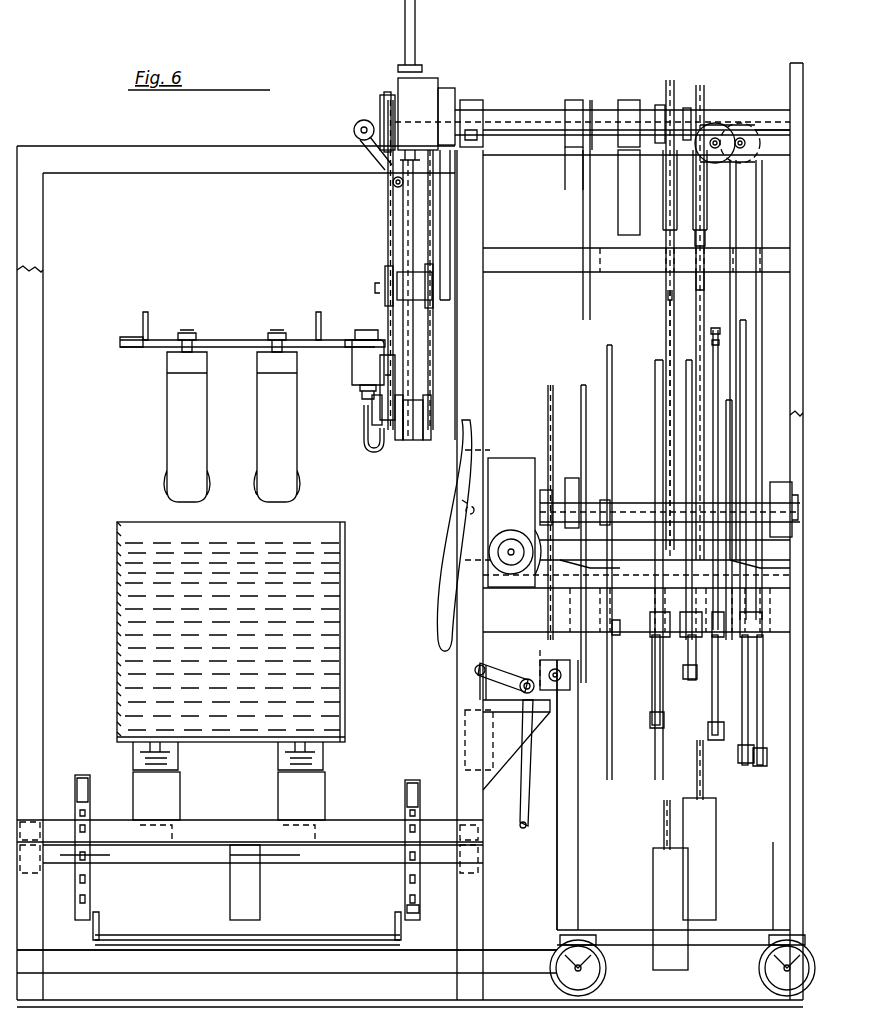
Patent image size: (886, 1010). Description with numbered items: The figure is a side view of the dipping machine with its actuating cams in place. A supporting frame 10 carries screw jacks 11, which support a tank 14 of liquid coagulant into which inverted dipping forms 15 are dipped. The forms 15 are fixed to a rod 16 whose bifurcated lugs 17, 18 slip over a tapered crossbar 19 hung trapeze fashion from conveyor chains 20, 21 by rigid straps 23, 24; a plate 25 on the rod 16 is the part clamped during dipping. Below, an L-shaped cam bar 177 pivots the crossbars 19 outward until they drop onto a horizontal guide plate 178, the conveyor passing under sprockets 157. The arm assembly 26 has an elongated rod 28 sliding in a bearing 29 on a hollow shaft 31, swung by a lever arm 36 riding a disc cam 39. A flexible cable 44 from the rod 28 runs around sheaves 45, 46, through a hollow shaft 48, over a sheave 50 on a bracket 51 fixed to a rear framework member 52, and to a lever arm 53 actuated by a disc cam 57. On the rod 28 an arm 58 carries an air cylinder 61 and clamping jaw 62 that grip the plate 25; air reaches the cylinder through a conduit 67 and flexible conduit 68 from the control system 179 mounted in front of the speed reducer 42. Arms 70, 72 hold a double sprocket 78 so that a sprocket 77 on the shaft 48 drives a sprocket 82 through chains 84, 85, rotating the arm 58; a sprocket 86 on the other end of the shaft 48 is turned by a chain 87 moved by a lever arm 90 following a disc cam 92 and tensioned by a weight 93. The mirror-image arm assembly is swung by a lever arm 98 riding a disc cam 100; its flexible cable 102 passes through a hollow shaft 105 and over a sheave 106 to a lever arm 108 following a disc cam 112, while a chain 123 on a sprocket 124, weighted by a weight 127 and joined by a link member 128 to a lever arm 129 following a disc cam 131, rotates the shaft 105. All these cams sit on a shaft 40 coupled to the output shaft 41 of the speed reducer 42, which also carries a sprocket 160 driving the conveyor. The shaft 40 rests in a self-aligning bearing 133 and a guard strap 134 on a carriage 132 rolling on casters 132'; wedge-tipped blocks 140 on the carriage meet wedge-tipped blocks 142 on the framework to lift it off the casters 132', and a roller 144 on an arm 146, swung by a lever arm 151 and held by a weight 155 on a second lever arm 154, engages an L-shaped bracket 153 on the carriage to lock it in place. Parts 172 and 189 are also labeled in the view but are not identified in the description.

The supporting frame 10 is at (357, 826).
The screw jacks 11 is at (277, 792).
The tank of liquid coagulant 14 is at (128, 521).
The dipping forms 15 is at (259, 362).
The rod 16 is at (232, 340).
The bifurcated lug 17 is at (146, 320).
The bifurcated lug 18 is at (316, 315).
The crossbars 19 is at (195, 928).
The chain 20 is at (90, 793).
The chain 21 is at (418, 795).
The strap 23 is at (98, 926).
The strap 24 is at (404, 929).
The plate 25 is at (367, 335).
The arm assembly 26 is at (376, 469).
The elongated rod 28 is at (402, 252).
The bearing 29 is at (428, 77).
The hollow shaft 31 is at (510, 112).
The lever arm 36 is at (565, 192).
The disc cam 39 is at (583, 384).
The shaft 40 is at (670, 492).
The output shaft 41 is at (532, 502).
The speed reducer 42 is at (500, 457).
The flexible cable 44 is at (372, 170).
The sheave 45 is at (380, 214).
The sheave 46 is at (356, 130).
The hollow shaft 48 is at (658, 102).
The sheave 50 is at (722, 125).
The bracket 51 is at (772, 130).
The horizontal framework member 52 is at (795, 66).
The lever arm 53 is at (722, 737).
The disc cam 57 is at (704, 351).
The arm 58 is at (367, 402).
The air cylinder 61 is at (352, 368).
The clamping jaw 62 is at (384, 341).
The conduit 67 is at (360, 445).
The flexible conduit 68 is at (430, 618).
The arm 70 is at (455, 330).
The second arm 72 is at (448, 195).
The sprocket 77 is at (382, 102).
The double sprocket 78 is at (417, 274).
The sprocket 82 is at (420, 440).
The chain 84 is at (380, 230).
The chain 85 is at (438, 348).
The sprocket 86 is at (668, 82).
The chain 87 is at (660, 265).
The lever arm 90 is at (654, 690).
The disc cam 92 is at (657, 402).
The weight 93 is at (652, 900).
The lever arm 98 is at (587, 227).
The disc cam 100 is at (604, 373).
The flexible cable 102 is at (757, 235).
The hollow shaft 105 is at (698, 84).
The sheave 106 is at (745, 120).
The lever arm 108 is at (756, 775).
The disc cam 112 is at (742, 322).
The chain 123 is at (698, 225).
The sprocket 124 is at (706, 88).
The weight 127 is at (712, 896).
The link member 128 is at (715, 390).
The lever arm 129 is at (703, 678).
The disc cam 131 is at (668, 344).
The carriage 132 is at (593, 795).
The casters 132' is at (682, 965).
The self-aligning bearing 133 is at (775, 482).
The guard strap 134 is at (563, 480).
The wedge-tipped block 140 is at (607, 545).
The wedge-tipped blocks 142 is at (615, 595).
The roller 144 is at (548, 660).
The arm 146 is at (543, 665).
The lever arm 151 is at (518, 820).
The L-shaped bracket 153 is at (568, 697).
The second lever arm 154 is at (493, 690).
The weight 155 is at (488, 751).
The sprockets 157 is at (406, 888).
The sprocket 160 is at (548, 402).
The arm 172 is at (124, 340).
The L-shaped cam bar 177 is at (258, 905).
The horizontal guide plate 178 is at (285, 945).
The control system 179 is at (466, 507).
The bracket 189 is at (667, 490).